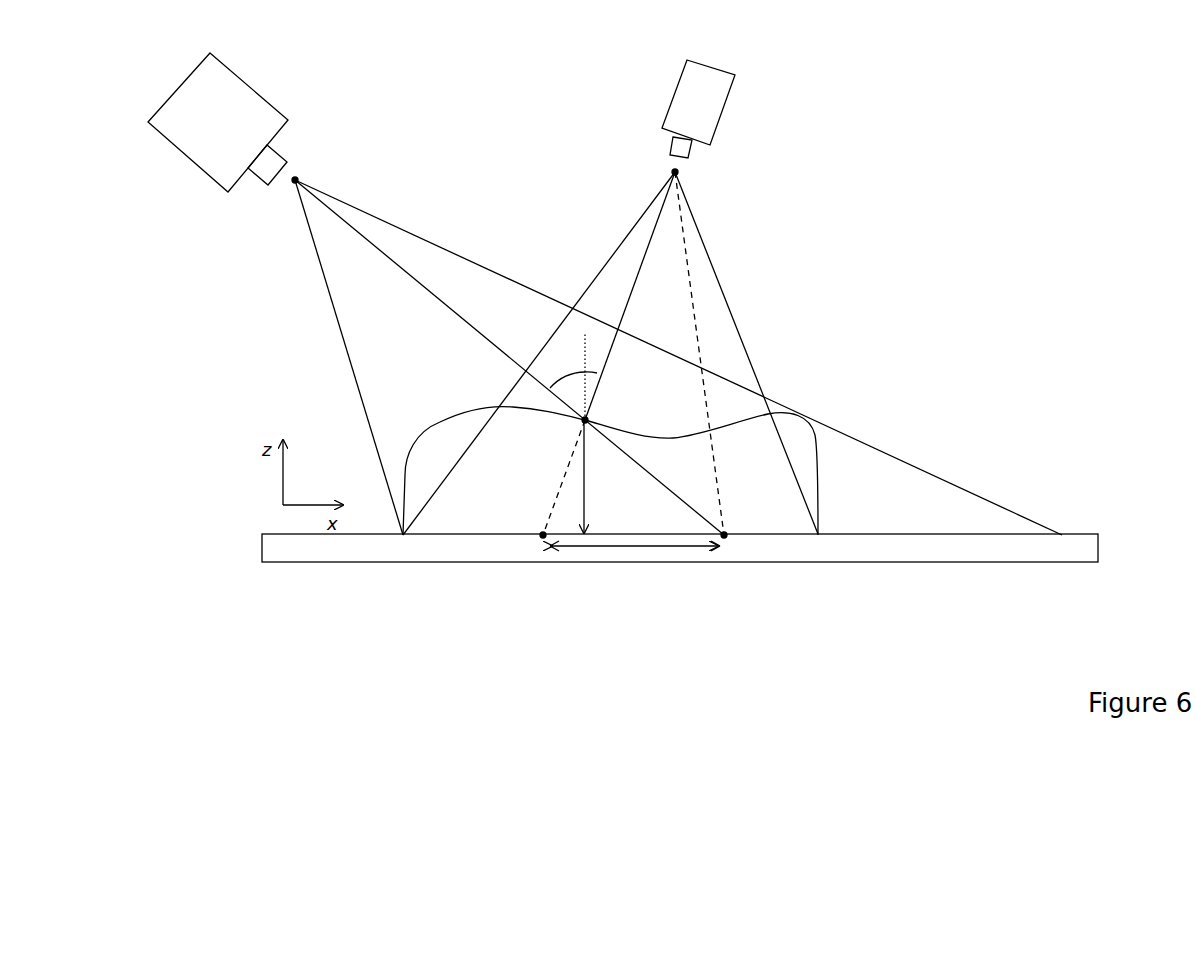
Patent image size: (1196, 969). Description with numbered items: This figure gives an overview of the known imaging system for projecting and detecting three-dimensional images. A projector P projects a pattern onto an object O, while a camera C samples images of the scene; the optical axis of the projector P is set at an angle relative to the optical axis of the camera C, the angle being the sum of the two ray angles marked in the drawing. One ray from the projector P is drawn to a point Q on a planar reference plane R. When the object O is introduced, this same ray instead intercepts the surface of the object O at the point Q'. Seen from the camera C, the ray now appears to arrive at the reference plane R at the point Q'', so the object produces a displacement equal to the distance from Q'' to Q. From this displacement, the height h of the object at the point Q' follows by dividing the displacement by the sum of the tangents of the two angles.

The projector P is at (605, 294).
The camera C is at (610, 297).
The planar reference plane R is at (680, 538).
The object O is at (610, 471).
The point on the object surface Q' is at (602, 378).
The point on the reference plane Q is at (733, 525).
The displaced point on the reference plane Q'' is at (545, 479).
The height h is at (594, 476).